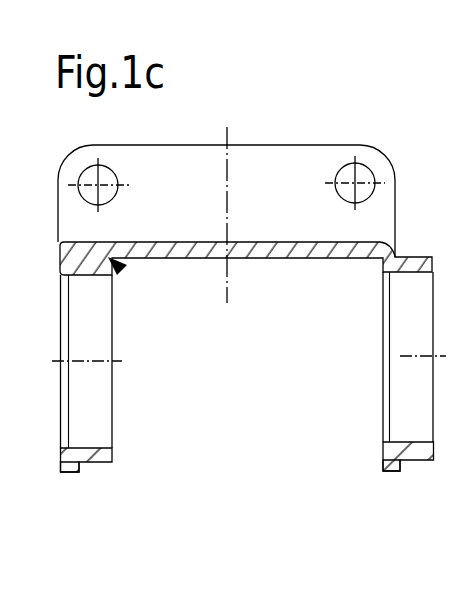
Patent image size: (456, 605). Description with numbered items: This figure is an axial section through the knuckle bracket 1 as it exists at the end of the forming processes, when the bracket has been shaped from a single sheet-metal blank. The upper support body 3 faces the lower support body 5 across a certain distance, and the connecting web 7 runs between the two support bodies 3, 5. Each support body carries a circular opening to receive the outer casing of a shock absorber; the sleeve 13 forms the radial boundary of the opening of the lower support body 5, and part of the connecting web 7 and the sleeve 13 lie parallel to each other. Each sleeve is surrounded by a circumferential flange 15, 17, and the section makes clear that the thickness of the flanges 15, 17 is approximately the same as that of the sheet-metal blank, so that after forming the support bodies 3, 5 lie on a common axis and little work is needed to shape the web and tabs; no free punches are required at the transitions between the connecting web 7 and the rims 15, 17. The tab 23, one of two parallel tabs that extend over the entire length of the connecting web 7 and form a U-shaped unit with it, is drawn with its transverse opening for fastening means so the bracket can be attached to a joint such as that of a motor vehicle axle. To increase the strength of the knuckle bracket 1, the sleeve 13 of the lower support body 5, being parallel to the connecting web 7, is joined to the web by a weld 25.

The knuckle bracket 1 is at (243, 511).
The upper support body 3 is at (397, 492).
The lower support body 5 is at (102, 471).
The connecting web 7 is at (279, 250).
The sleeve 13 is at (100, 456).
The circumferential flange 15 is at (401, 473).
The circumferential flange 17 is at (80, 474).
The tab 23 is at (246, 153).
The weld 25 is at (122, 268).